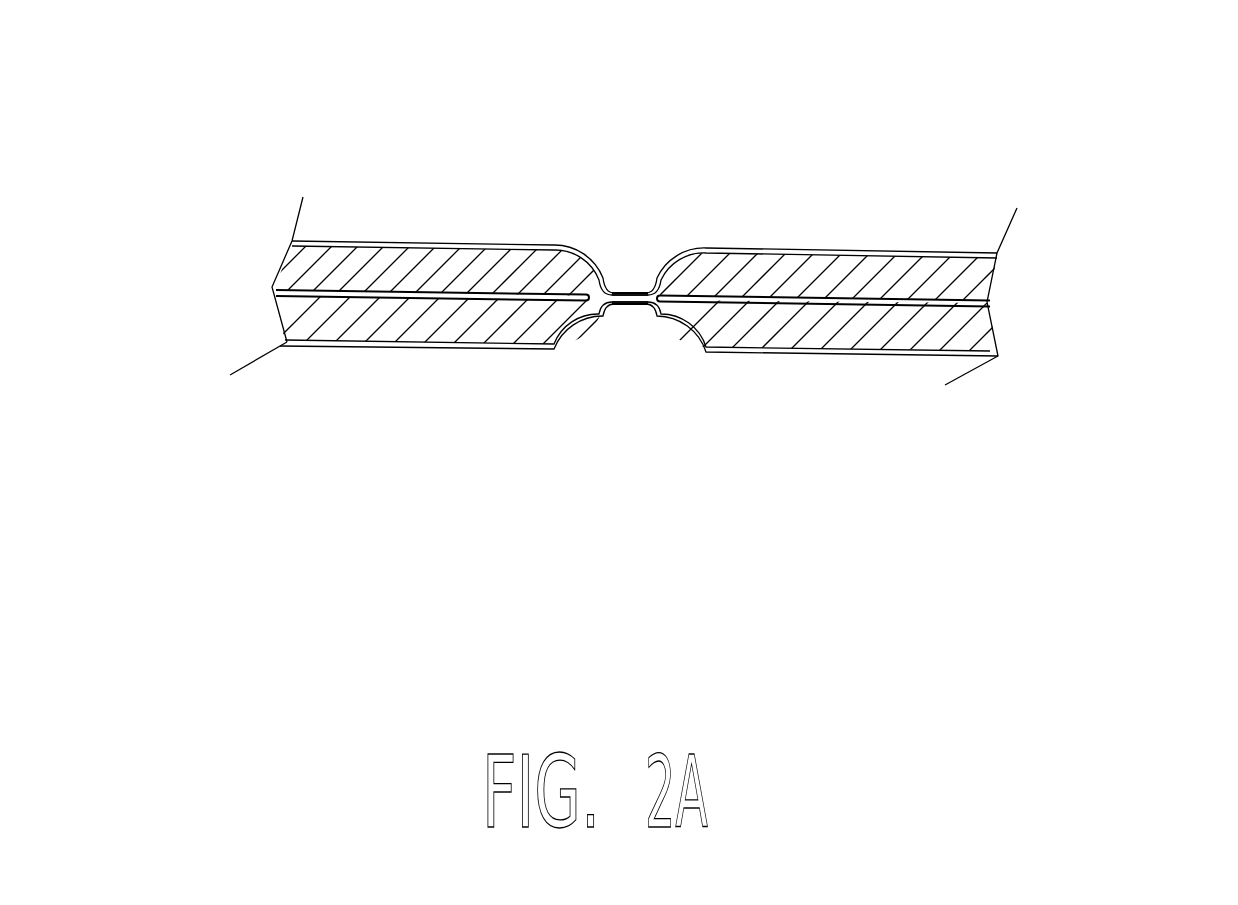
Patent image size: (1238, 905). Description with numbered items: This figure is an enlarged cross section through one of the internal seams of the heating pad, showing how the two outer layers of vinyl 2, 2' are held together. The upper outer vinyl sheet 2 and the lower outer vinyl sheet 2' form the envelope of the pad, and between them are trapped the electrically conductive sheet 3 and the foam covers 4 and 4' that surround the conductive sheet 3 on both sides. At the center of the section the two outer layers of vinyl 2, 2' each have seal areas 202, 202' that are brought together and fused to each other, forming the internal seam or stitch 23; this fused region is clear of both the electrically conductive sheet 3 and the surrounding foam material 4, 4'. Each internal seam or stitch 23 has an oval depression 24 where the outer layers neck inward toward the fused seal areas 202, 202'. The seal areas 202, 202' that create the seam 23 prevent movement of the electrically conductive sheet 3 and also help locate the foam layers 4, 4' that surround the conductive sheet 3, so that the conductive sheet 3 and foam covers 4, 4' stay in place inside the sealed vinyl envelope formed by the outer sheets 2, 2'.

The outer vinyl sheet 2 is at (644, 180).
The outer vinyl sheet 2' is at (639, 426).
The foam cover 4 is at (630, 160).
The foam cover 4' is at (688, 419).
The electrically conductive sheet 3 is at (751, 223).
The internal seam or stitch 23 is at (558, 167).
The oval depression 24 is at (576, 436).
The seal area 202 is at (699, 160).
The seal area 202' is at (557, 394).